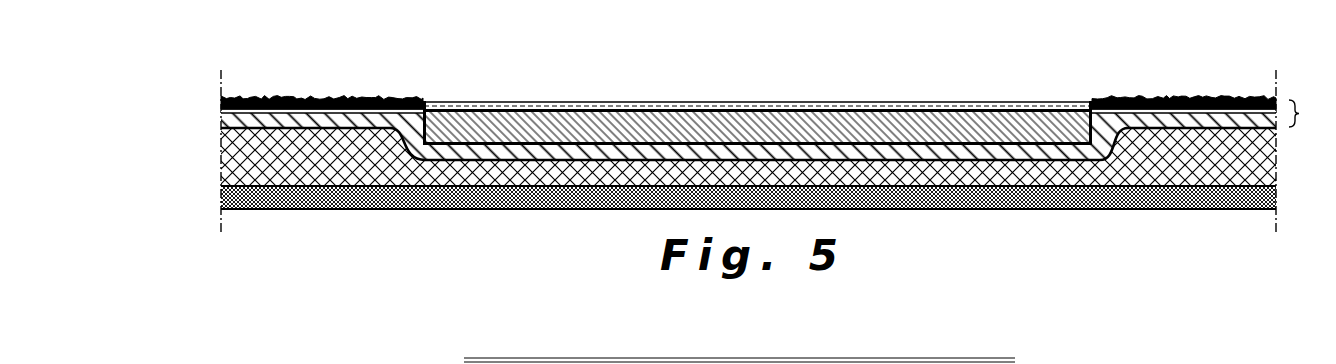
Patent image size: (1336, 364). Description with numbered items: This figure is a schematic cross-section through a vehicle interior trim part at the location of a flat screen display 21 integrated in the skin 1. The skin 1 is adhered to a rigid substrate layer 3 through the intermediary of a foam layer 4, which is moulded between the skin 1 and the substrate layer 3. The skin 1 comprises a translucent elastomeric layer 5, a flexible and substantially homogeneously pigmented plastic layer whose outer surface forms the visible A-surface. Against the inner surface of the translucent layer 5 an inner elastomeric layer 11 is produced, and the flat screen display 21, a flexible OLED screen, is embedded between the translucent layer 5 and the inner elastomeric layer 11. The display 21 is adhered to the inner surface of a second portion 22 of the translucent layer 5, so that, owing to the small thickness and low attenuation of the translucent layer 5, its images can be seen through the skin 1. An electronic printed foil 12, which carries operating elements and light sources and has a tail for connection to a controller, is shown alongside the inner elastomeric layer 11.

The skin 1 is at (1306, 111).
The substrate layer 3 is at (1248, 197).
The foam layer 4 is at (1245, 166).
The translucent elastomeric layer 5 is at (220, 102).
The inner elastomeric layer 11 is at (220, 128).
The electronic printed foil 12 is at (219, 114).
The flat screen display 21 is at (600, 135).
The second portion of the translucent layer 22 is at (782, 103).